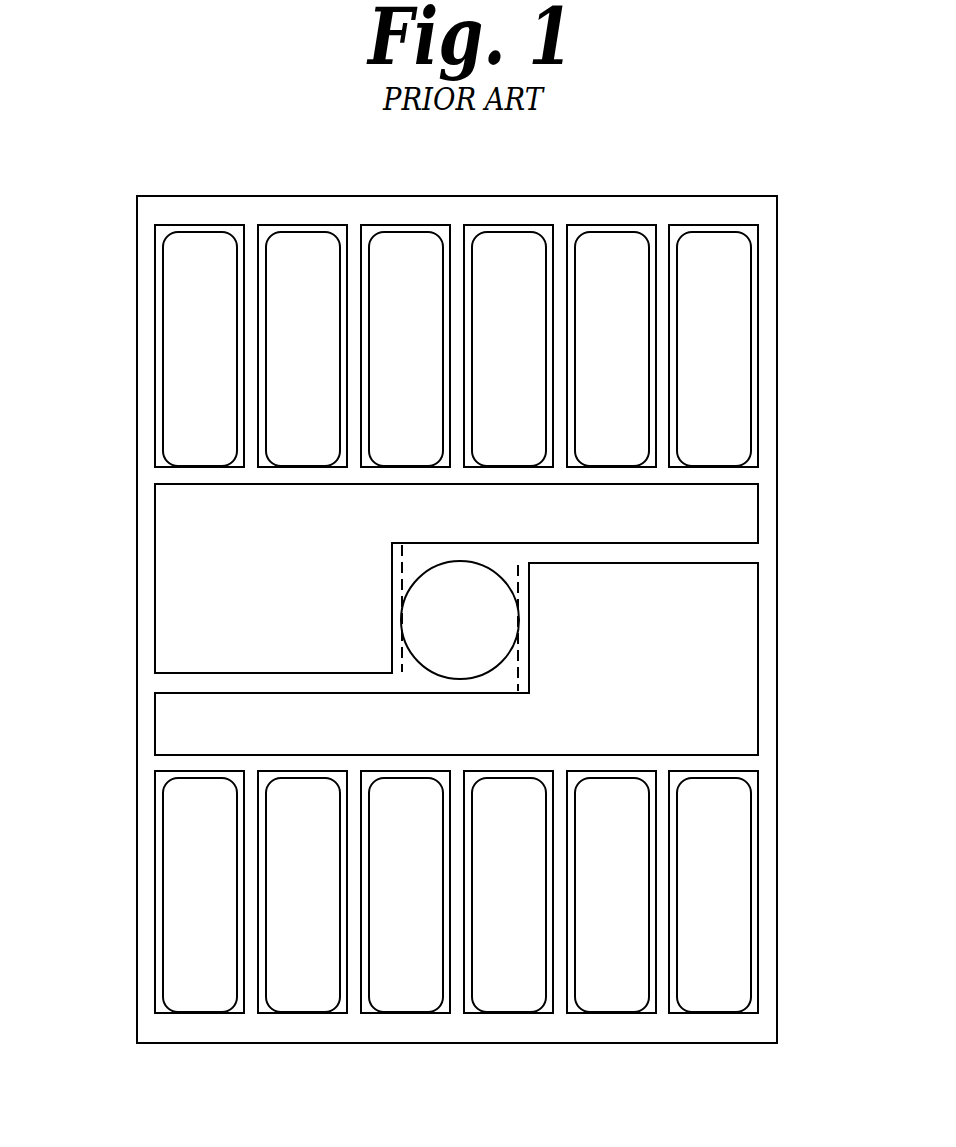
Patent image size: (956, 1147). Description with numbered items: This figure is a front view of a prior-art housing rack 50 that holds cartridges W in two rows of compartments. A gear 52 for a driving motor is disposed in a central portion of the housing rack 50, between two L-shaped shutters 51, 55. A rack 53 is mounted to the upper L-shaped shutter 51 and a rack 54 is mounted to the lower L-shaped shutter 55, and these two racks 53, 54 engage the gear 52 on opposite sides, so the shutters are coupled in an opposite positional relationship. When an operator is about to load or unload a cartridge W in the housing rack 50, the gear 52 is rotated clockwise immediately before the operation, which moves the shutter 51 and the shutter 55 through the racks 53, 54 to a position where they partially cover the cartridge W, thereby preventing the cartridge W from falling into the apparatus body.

The cartridge W is at (720, 285).
The housing rack 50 is at (777, 395).
The L-shaped shutter 51 is at (195, 550).
The gear for a driving motor 52 is at (445, 613).
The rack 53 is at (400, 663).
The rack 54 is at (528, 677).
The L-shaped shutter 55 is at (707, 630).